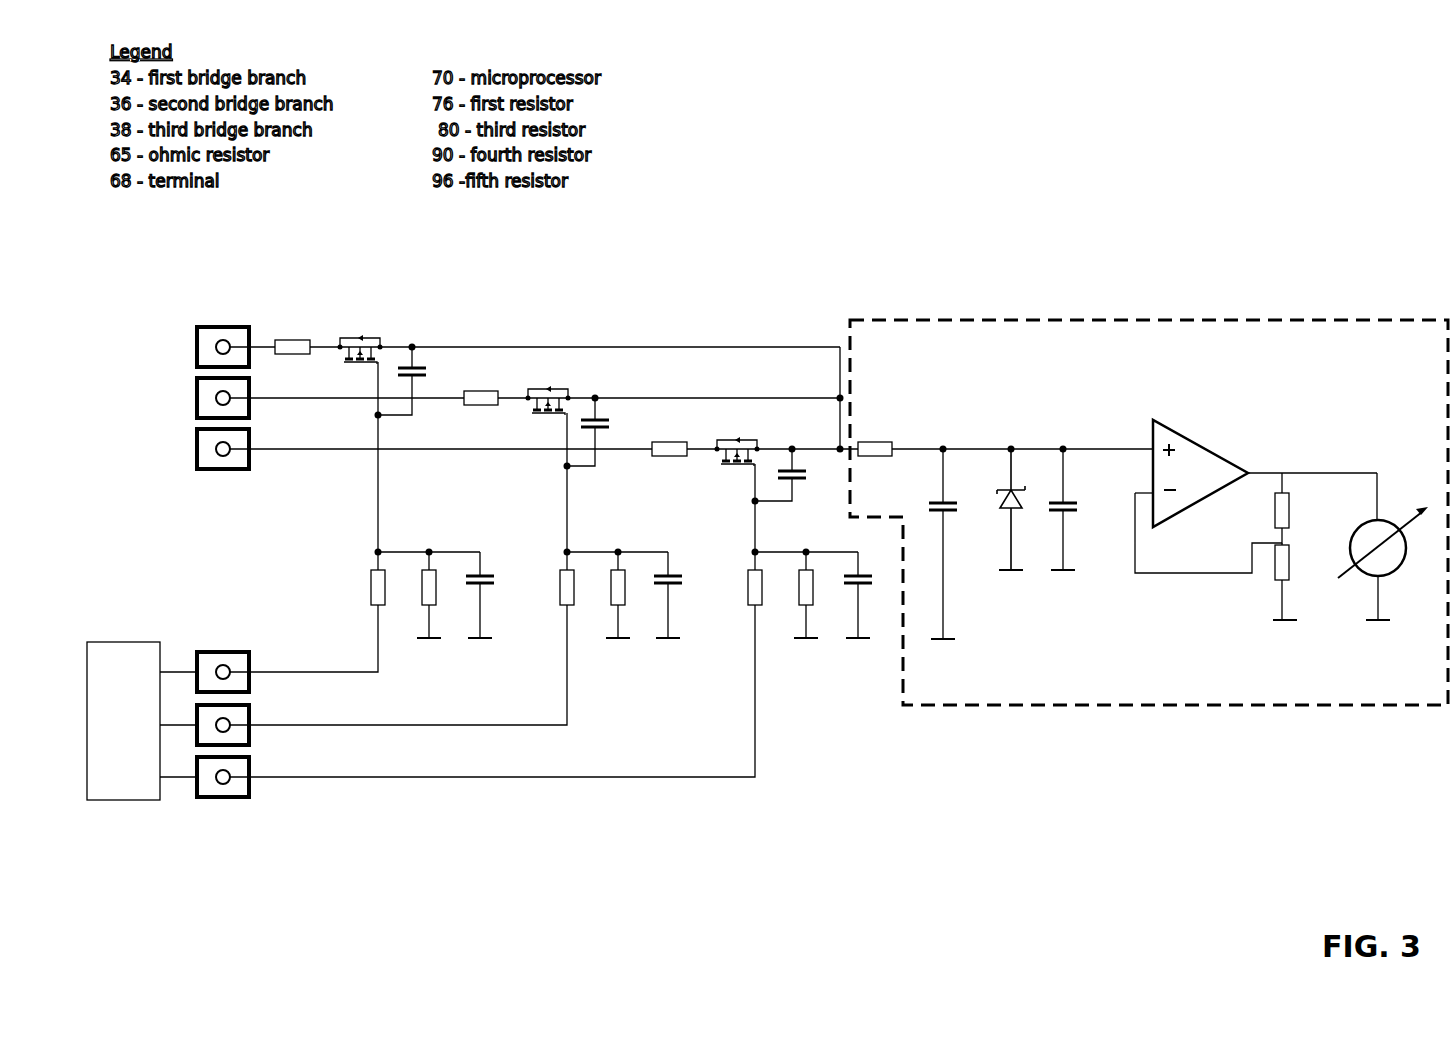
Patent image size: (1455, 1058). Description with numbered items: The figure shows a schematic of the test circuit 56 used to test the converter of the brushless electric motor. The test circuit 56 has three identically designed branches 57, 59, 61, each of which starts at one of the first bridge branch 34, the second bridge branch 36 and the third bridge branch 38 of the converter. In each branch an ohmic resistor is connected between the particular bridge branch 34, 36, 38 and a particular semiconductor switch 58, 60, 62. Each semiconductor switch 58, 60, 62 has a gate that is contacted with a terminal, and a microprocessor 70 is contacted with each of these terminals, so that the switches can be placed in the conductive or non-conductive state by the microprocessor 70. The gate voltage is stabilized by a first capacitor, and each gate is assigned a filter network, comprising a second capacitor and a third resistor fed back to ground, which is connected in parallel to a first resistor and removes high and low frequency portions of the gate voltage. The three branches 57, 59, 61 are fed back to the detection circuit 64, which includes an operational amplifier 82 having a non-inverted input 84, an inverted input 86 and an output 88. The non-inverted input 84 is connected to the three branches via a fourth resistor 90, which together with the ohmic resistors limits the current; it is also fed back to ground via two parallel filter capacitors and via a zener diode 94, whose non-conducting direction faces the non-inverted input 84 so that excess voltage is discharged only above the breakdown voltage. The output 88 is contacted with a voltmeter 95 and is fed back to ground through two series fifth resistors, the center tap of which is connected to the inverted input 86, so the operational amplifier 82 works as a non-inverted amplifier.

The first bridge branch 34 is at (211, 340).
The second bridge branch 36 is at (205, 393).
The third bridge branch 38 is at (212, 458).
The test circuit 56 is at (1197, 283).
The branch 57 is at (658, 347).
The semiconductor switch 58 is at (365, 336).
The branch 59 is at (695, 398).
The semiconductor switch 60 is at (555, 388).
The branch 61 is at (817, 449).
The semiconductor switch 62 is at (745, 440).
The detection circuit 64 is at (1308, 320).
The microprocessor 70 is at (142, 721).
The operational amplifier 82 is at (1193, 443).
The non-inverted input 84 is at (1153, 446).
The inverted input 86 is at (1135, 503).
The output 88 is at (1250, 471).
The fourth resistor 90 is at (877, 442).
The zener diode 94 is at (1003, 502).
The voltmeter 95 is at (1402, 560).